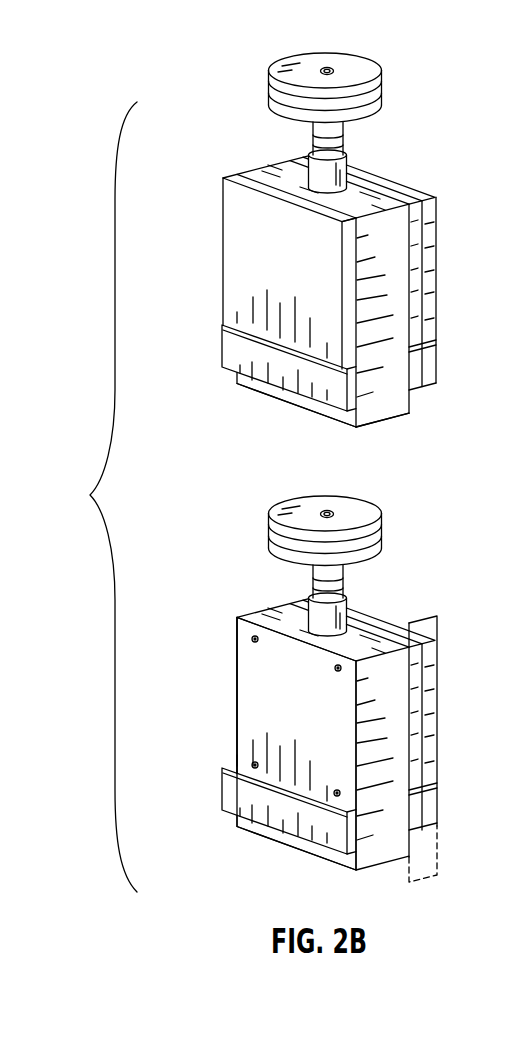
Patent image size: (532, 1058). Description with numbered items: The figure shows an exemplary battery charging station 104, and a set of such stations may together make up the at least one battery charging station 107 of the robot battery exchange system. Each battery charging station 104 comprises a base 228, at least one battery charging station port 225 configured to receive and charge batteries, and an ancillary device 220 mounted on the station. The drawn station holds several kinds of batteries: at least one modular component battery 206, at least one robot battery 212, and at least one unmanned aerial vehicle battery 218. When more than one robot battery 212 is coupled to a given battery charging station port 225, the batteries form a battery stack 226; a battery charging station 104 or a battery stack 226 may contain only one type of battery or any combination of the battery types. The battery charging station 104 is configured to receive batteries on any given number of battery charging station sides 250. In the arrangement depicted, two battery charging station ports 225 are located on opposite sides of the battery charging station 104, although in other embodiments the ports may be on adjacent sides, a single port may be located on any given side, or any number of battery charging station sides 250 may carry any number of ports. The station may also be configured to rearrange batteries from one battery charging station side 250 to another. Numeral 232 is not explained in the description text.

The battery charging station 104 is at (456, 91).
The battery charging station 107 is at (90, 495).
The modular component battery 206 is at (243, 267).
The robot battery 212 is at (236, 343).
The unmanned aerial vehicle battery 218 is at (270, 538).
The ancillary device 220 is at (355, 172).
The battery charging station port 225 is at (255, 704).
The battery stack 226 is at (422, 617).
The base 228 is at (399, 400).
The front surface 232 is at (232, 632).
The battery charging station side 250 is at (234, 165).